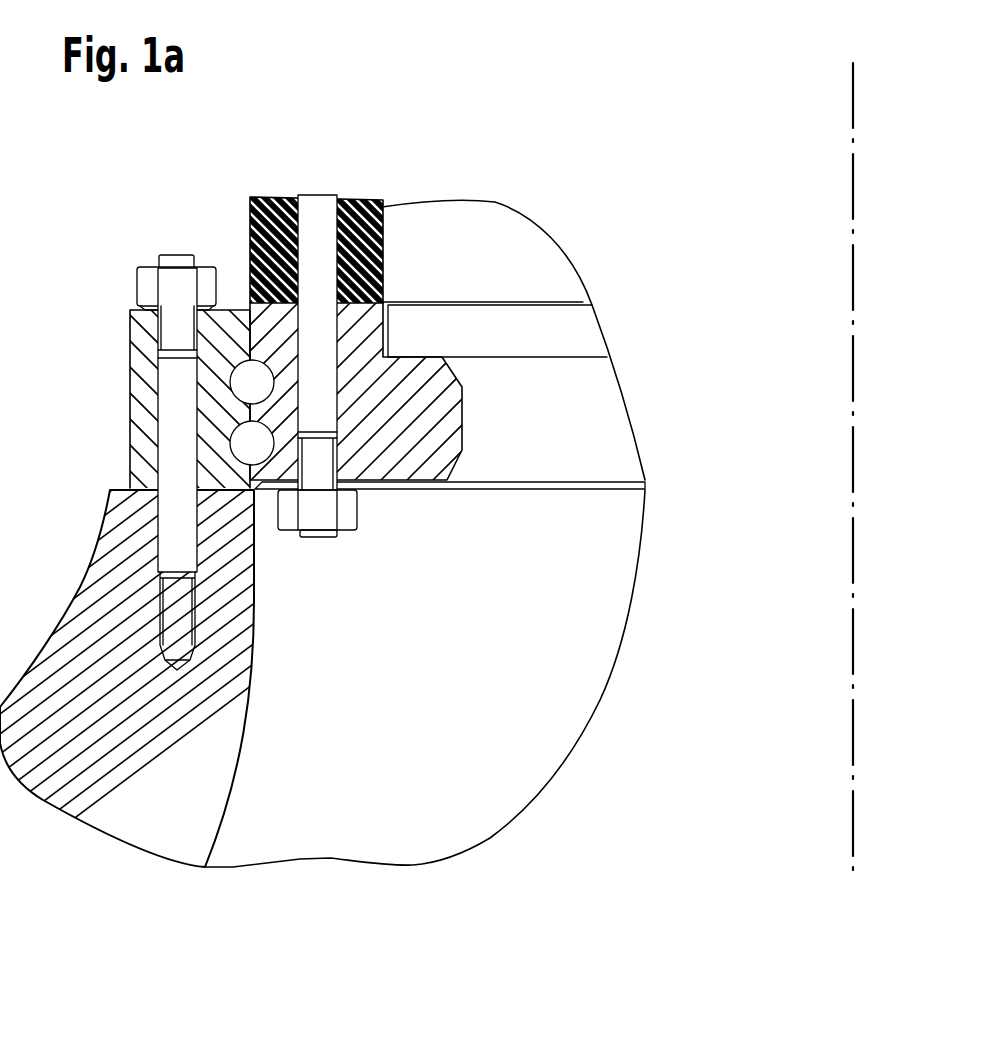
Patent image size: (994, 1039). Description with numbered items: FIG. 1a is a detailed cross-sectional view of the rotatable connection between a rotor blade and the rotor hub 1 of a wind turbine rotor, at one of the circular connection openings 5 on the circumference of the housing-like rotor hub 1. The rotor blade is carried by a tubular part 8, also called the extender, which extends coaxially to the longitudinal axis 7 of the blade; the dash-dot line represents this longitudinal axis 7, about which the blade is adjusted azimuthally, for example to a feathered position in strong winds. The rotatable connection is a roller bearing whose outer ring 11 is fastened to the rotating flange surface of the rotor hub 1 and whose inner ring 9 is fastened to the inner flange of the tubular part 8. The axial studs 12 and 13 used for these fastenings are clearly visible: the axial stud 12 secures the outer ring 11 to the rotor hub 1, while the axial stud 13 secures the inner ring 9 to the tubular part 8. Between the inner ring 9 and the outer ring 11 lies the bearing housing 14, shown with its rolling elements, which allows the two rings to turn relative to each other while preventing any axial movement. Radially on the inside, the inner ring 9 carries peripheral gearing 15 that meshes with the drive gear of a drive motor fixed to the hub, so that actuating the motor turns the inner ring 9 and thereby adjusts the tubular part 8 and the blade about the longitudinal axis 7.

The rotor hub 1 is at (217, 780).
The connection opening 5 is at (508, 491).
The longitudinal axis 7 is at (853, 184).
The tubular part 8 is at (357, 200).
The inner ring 9 is at (423, 446).
The outer ring 11 is at (147, 331).
The axial stud 12 is at (178, 415).
The axial stud 13 is at (320, 331).
The bearing housing 14 is at (245, 374).
The peripheral gearing 15 is at (478, 405).